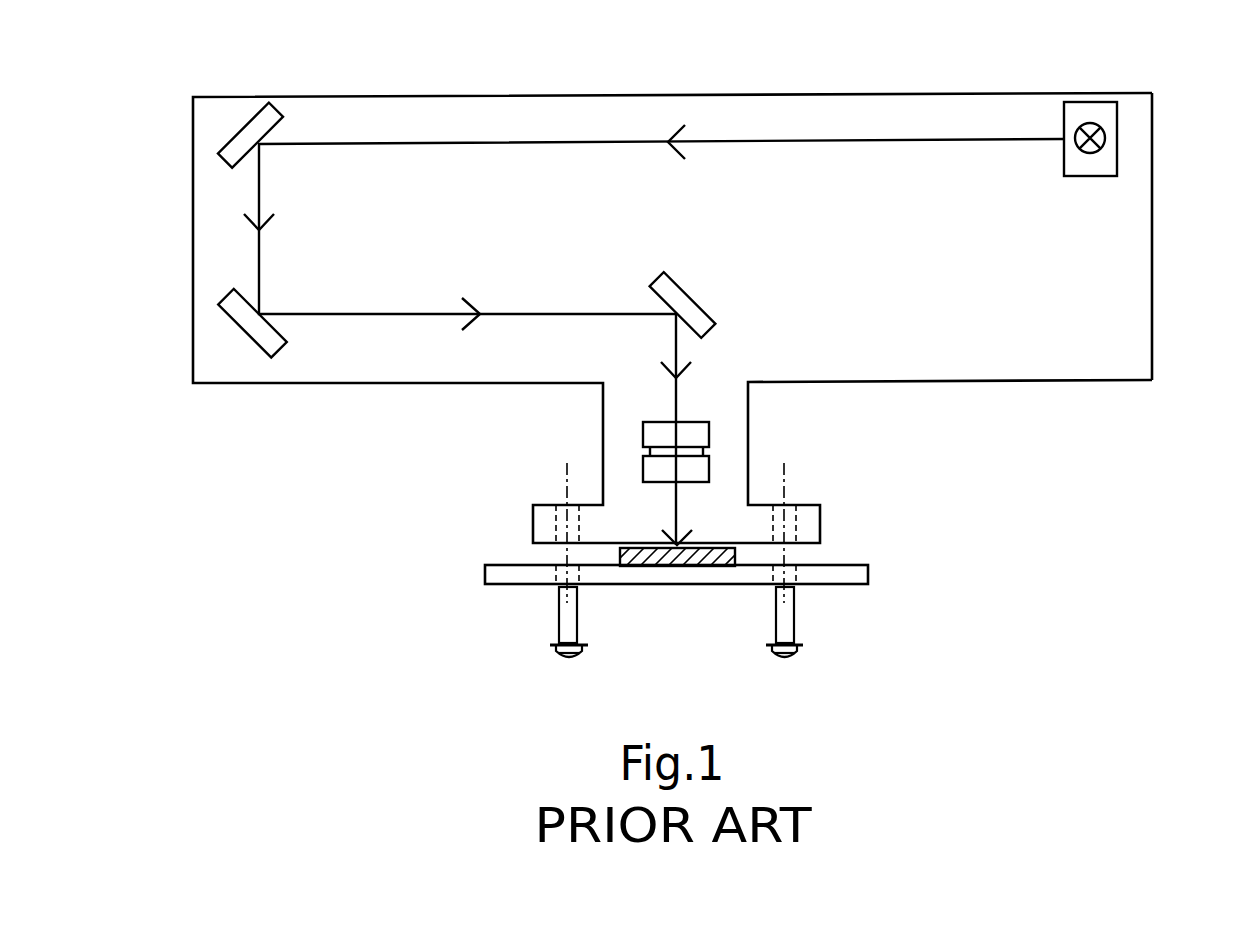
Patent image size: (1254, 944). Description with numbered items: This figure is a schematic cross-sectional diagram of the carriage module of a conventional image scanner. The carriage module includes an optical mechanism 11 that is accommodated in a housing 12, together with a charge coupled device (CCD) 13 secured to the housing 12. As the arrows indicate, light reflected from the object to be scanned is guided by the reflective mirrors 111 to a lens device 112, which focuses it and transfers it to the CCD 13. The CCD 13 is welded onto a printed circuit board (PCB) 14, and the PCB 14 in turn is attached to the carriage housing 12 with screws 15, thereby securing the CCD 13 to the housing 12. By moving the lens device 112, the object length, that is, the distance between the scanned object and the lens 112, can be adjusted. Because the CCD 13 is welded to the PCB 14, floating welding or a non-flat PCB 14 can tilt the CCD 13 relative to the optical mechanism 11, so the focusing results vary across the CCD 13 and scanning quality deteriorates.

The optical mechanism 11 is at (1132, 335).
The housing 12 is at (1152, 227).
The reflective mirrors 111 is at (238, 145).
The lens device 112 is at (712, 460).
The charge coupled device (CCD) 13 is at (670, 557).
The printed circuit board (PCB) 14 is at (842, 575).
The screws 15 is at (567, 620).